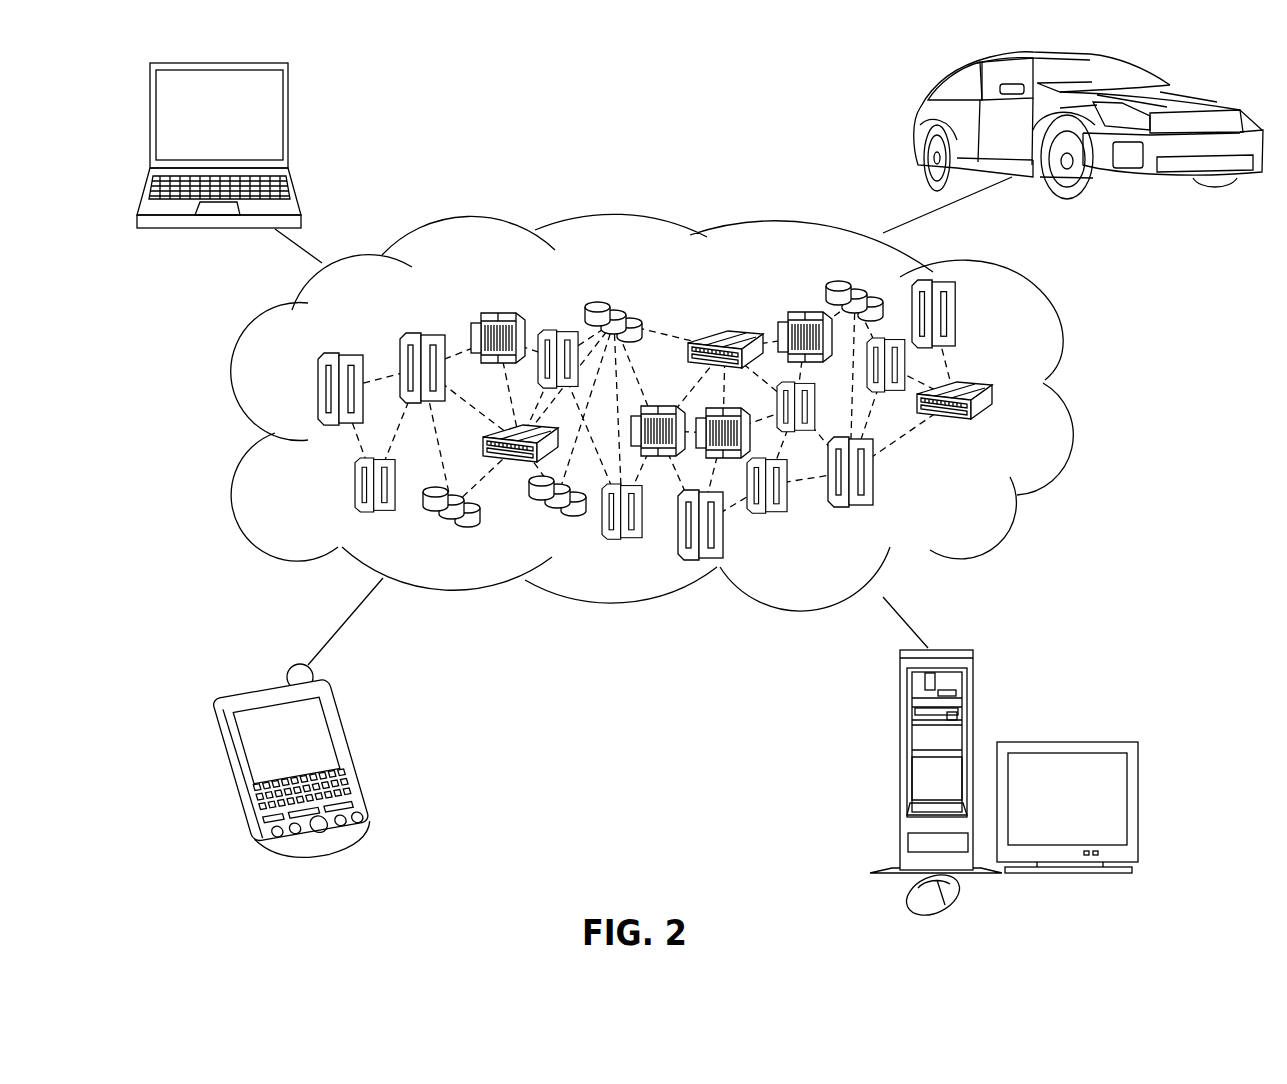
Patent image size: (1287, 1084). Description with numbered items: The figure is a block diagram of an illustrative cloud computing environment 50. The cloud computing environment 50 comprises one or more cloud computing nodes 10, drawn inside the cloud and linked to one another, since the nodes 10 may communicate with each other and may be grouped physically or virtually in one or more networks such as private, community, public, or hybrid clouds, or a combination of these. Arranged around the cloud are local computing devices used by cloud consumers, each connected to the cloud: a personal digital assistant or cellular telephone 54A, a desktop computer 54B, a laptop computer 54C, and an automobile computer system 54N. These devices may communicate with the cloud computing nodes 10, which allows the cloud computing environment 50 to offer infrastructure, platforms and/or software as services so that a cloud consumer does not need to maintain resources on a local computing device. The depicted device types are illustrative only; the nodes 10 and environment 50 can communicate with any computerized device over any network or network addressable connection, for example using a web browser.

The cloud computing nodes 10 is at (972, 499).
The cloud computing environment 50 is at (1062, 402).
The personal digital assistant (PDA) or cellular telephone 54A is at (343, 722).
The desktop computer 54B is at (898, 708).
The laptop computer 54C is at (288, 102).
The automobile computer system 54N is at (912, 122).